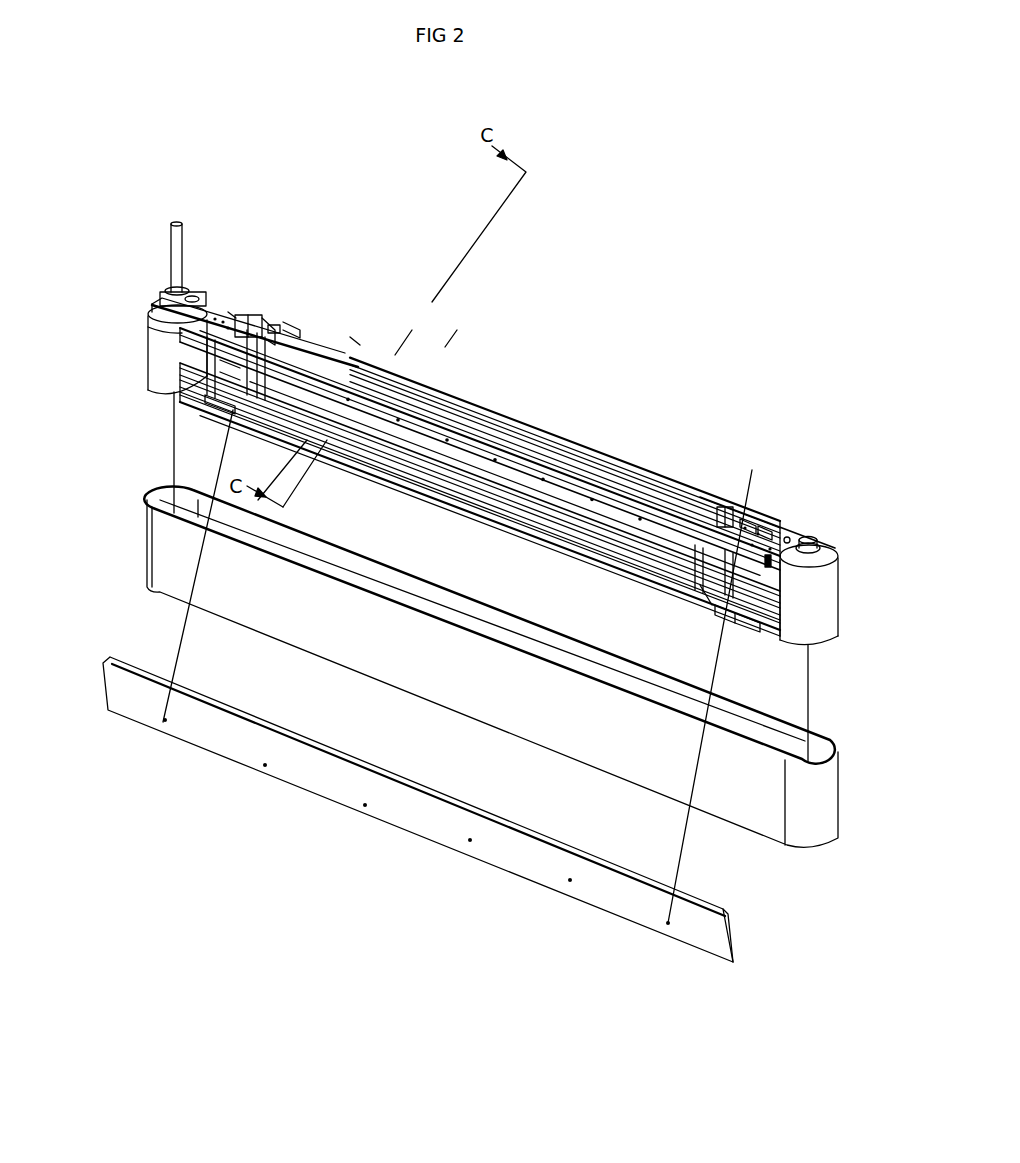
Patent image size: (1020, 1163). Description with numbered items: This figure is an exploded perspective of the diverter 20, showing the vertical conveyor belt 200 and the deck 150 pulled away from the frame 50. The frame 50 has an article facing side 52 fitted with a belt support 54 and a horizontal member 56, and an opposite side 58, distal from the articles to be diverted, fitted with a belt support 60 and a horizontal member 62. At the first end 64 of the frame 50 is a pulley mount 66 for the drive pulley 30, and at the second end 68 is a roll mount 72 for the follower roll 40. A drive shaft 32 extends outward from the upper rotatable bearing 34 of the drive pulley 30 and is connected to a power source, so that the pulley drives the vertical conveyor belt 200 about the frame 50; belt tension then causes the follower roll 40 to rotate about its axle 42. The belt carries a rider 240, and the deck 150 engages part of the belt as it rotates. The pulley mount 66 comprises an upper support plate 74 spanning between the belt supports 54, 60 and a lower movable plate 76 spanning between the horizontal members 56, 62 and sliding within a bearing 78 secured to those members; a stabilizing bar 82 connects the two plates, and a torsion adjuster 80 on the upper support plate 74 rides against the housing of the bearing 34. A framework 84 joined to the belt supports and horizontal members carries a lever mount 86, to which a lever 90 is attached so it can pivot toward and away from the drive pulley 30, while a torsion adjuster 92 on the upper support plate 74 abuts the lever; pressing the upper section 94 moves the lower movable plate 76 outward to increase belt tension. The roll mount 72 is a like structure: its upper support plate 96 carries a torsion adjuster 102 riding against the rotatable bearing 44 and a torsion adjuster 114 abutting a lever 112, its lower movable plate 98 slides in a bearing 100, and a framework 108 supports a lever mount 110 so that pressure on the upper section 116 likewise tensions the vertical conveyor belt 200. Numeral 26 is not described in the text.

The diverter 20 is at (589, 313).
The roller assembly 26 is at (150, 304).
The drive pulley 30 is at (163, 350).
The drive shaft 32 is at (178, 284).
The upper rotatable bearing 34 is at (184, 293).
The follower roll 40 is at (815, 605).
The axle 42 is at (808, 540).
The rotatable bearing 44 is at (823, 545).
The frame 50 is at (267, 318).
The article facing side 52 is at (223, 500).
The belt support 54 is at (460, 435).
The horizontal member 56 is at (392, 502).
The side 58 is at (560, 405).
The belt support 60 is at (518, 430).
The horizontal member 62 is at (450, 497).
The first end 64 is at (258, 312).
The pulley mount 66 is at (238, 312).
The second end 68 is at (766, 522).
The roll mount 72 is at (760, 521).
The upper support plate 74 is at (155, 298).
The lower movable plate 76 is at (228, 418).
The bearing 78 is at (190, 392).
The torsion adjuster 80 is at (192, 296).
The stabilizing bar 82 is at (205, 397).
The framework 84 is at (223, 396).
The lever mount 86 is at (357, 342).
The lever 90 is at (276, 324).
The torsion adjuster 92 is at (233, 314).
The upper section 94 is at (286, 327).
The upper support plate 96 is at (768, 533).
The lower movable plate 98 is at (712, 605).
The bearing 100 is at (735, 623).
The torsion adjuster 102 is at (790, 537).
The framework 108 is at (730, 582).
The lever mount 110 is at (640, 550).
The lever 112 is at (733, 520).
The torsion adjuster 114 is at (733, 523).
The upper section 116 is at (717, 508).
The deck 150 is at (505, 815).
The vertical conveyor belt 200 is at (273, 582).
The rider 240 is at (268, 521).